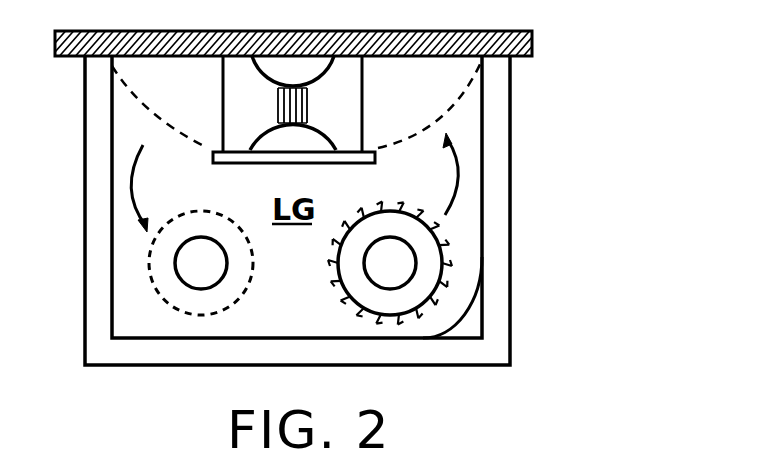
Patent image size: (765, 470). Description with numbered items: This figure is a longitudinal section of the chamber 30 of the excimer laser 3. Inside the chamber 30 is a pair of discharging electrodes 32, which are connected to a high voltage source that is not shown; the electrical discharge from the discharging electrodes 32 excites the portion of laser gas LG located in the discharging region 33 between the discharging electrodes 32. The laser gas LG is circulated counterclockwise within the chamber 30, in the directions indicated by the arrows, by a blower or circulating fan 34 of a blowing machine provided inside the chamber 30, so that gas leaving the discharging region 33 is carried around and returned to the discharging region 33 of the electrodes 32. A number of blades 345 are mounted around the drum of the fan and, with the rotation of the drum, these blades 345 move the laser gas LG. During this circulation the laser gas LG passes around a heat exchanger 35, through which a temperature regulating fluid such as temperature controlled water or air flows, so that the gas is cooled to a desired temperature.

The excimer laser 3 is at (537, 42).
The chamber 30 is at (512, 152).
The discharging electrodes 32 is at (310, 140).
The discharging region 33 is at (277, 100).
The circulating fan 34 is at (398, 257).
The heat exchanger 35 is at (193, 225).
The blades 345 is at (452, 262).